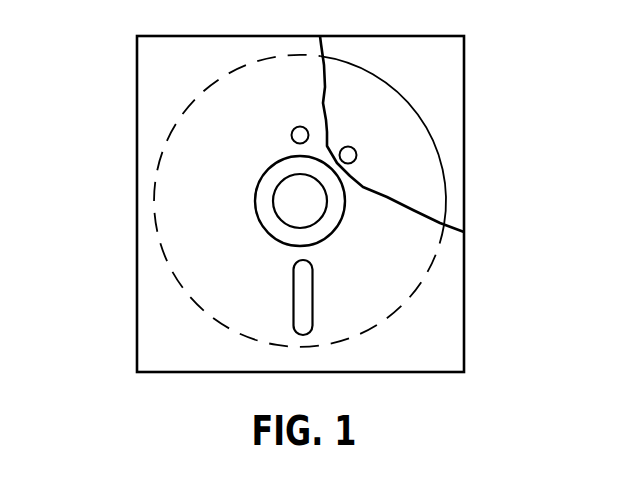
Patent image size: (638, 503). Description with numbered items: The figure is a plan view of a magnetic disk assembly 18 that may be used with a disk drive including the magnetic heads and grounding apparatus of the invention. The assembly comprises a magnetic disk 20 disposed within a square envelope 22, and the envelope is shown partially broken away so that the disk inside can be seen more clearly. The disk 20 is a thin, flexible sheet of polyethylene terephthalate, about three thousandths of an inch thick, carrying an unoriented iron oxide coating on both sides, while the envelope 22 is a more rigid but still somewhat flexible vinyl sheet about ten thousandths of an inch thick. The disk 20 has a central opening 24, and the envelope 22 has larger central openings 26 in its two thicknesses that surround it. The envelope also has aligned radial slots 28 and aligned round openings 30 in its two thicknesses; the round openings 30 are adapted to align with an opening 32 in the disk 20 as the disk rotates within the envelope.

The magnetic disk assembly 18 is at (100, 186).
The magnetic disk 20 is at (405, 97).
The envelope 22 is at (458, 312).
The central opening 24 is at (326, 209).
The central openings 26 is at (323, 238).
The radial slots 28 is at (313, 300).
The round openings 30 is at (300, 126).
The opening 32 is at (357, 155).